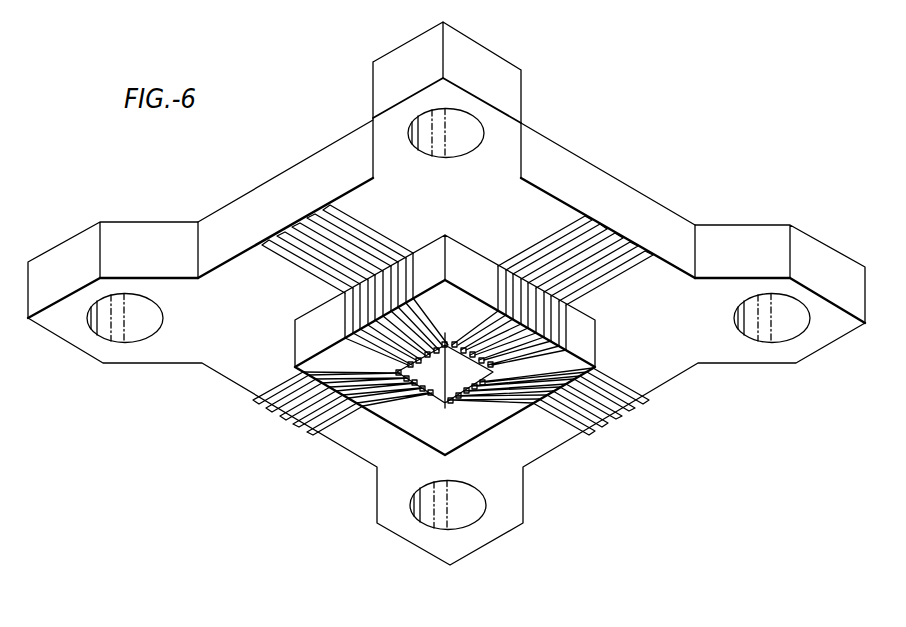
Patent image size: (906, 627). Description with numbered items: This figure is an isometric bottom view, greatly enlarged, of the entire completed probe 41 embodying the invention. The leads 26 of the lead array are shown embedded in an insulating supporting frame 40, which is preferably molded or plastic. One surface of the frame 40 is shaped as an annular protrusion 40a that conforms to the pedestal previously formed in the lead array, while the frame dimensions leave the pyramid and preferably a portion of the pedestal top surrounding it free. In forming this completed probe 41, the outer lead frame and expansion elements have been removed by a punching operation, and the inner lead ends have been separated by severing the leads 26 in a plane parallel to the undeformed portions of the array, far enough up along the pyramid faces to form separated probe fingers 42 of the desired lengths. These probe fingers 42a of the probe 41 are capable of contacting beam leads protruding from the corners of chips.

The leads 26 is at (523, 247).
The insulating supporting frame 40 is at (525, 498).
The annular protrusion 40a is at (597, 343).
The completed probe 41 is at (727, 148).
The probe fingers 42 is at (400, 365).
The probe fingers 42a is at (445, 345).